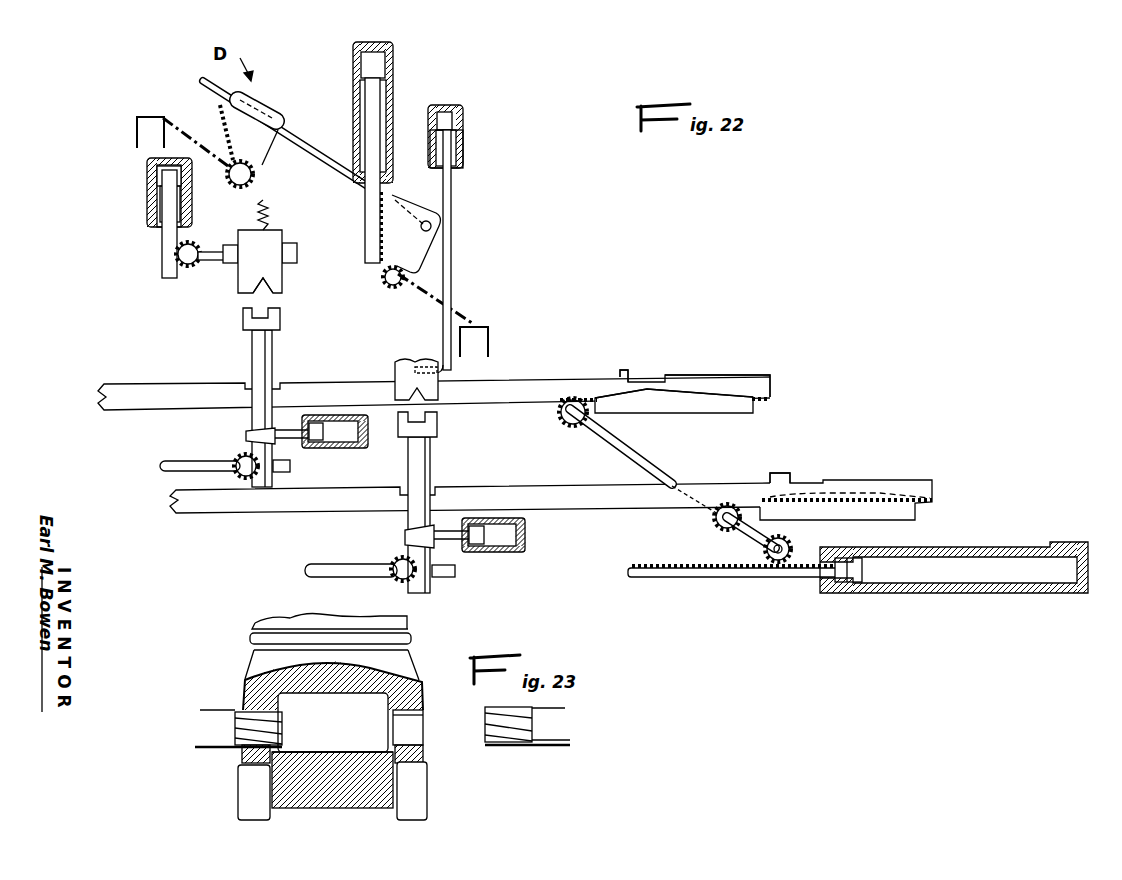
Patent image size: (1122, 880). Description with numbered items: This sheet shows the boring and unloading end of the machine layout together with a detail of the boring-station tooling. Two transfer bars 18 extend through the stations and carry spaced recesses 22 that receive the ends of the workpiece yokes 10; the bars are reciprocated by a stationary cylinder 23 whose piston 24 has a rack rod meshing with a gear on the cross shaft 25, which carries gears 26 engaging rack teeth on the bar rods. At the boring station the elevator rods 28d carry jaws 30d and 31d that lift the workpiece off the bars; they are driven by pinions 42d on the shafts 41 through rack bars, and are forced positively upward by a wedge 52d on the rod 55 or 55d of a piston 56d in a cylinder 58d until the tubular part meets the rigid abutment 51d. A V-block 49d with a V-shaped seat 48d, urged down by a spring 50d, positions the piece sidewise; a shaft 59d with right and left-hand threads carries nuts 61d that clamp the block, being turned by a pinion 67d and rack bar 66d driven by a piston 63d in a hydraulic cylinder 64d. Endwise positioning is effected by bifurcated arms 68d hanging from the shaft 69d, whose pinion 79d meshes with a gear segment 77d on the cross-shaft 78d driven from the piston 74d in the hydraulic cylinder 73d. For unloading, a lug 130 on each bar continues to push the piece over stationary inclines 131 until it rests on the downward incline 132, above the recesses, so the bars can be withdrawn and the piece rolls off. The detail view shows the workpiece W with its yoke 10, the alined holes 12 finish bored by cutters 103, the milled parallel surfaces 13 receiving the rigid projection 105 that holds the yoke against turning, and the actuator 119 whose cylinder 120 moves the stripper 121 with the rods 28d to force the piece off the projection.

In FIG. 22, the transfer bars 18 is at (100, 402).
In FIG. 22, the recesses 22 is at (656, 382).
In FIG. 22, the lug 130 is at (626, 370).
In FIG. 22, the stationary inclines 131 is at (612, 392).
In FIG. 22, the downward incline 132 is at (710, 392).
In FIG. 22, the elevator rods 28d is at (253, 362).
In FIG. 22, the jaw 31d is at (243, 320).
In FIG. 22, the jaw 30d is at (438, 427).
In FIG. 22, the shafts 41 is at (170, 461).
In FIG. 22, the pinion 42d is at (234, 462).
In FIG. 22, the wedge 52d is at (248, 434).
In FIG. 22, the rod 55 is at (288, 440).
In FIG. 22, the rod 55d is at (456, 542).
In FIG. 22, the cylinder 58d is at (352, 447).
In FIG. 22, the piston 56d is at (316, 442).
In FIG. 22, the piston 63d is at (157, 177).
In FIG. 22, the hydraulic cylinder 64d is at (158, 202).
In FIG. 22, the rack bar 66d is at (162, 252).
In FIG. 22, the pinion 67d is at (176, 263).
In FIG. 22, the shaft 59d is at (207, 252).
In FIG. 22, the nuts 61d is at (297, 255).
In FIG. 22, the V-block 49d is at (282, 236).
In FIG. 22, the V-shaped seat 48d is at (243, 295).
In FIG. 22, the spring 50d is at (268, 214).
In FIG. 22, the cross-shaft 78d is at (313, 147).
In FIG. 22, the gear segment 77d is at (219, 110).
In FIG. 22, the pinion 79d is at (236, 188).
In FIG. 22, the shaft 69d is at (180, 123).
In FIG. 22, the bifurcated arms 68d is at (137, 135).
In FIG. 23, the bifurcated arms 68d is at (240, 806).
In FIG. 22, the piston 74d is at (393, 65).
In FIG. 22, the hydraulic cylinder 73d is at (388, 90).
In FIG. 22, the actuator 119 is at (463, 106).
In FIG. 22, the cylinder 120 is at (463, 140).
In FIG. 22, the stripper 121 is at (423, 366).
In FIG. 22, the abutment 51d is at (398, 385).
In FIG. 22, the cross shaft 25 is at (655, 469).
In FIG. 22, the gears 26 is at (568, 430).
In FIG. 22, the piston 24 is at (858, 588).
In FIG. 22, the stationary cylinder 23 is at (1010, 588).
In FIG. 23, the workpiece W is at (275, 621).
In FIG. 23, the holes 12 is at (424, 714).
In FIG. 23, the cutters 103 is at (283, 724).
In FIG. 23, the parallel surfaces 13 is at (300, 752).
In FIG. 23, the projection 105 is at (362, 748).
In FIG. 23, the yokes 10 is at (424, 752).